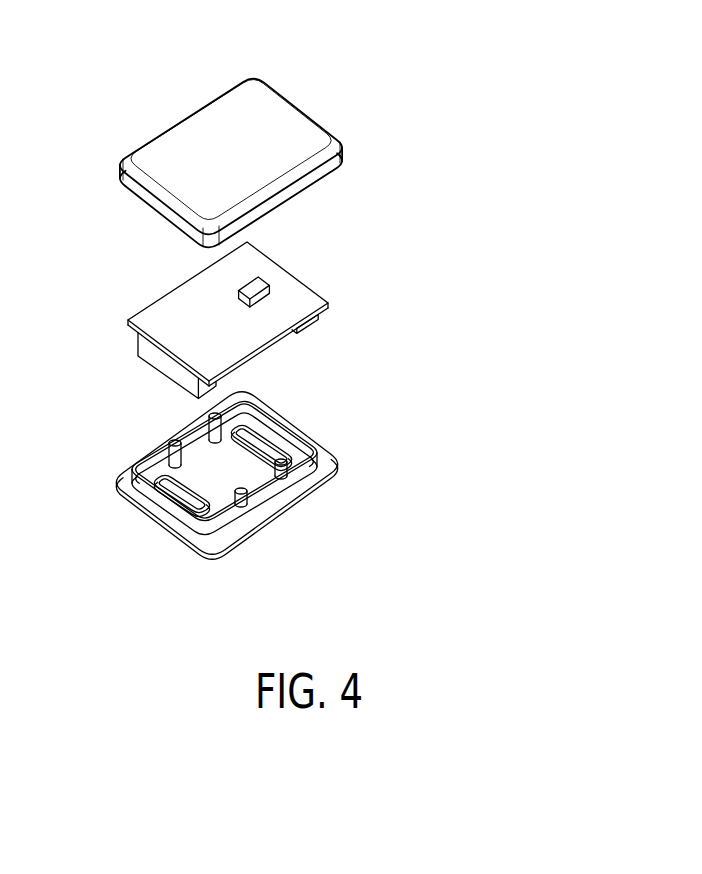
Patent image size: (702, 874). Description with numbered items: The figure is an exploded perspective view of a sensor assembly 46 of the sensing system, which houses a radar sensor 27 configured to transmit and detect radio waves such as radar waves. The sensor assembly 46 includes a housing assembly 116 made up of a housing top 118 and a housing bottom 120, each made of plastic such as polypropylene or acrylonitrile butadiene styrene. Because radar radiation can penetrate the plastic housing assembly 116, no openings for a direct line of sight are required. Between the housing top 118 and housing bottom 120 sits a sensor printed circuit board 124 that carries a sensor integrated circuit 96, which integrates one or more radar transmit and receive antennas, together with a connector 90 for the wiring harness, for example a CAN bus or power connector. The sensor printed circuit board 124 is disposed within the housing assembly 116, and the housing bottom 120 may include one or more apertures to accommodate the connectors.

The sensor assembly 46 is at (309, 293).
The radar sensor 27 is at (268, 309).
The housing assembly 116 is at (196, 293).
The housing top 118 is at (293, 128).
The housing bottom 120 is at (140, 519).
The sensor integrated circuit 96 is at (262, 284).
The sensor printed circuit board 124 is at (277, 325).
The connector 90 is at (168, 363).